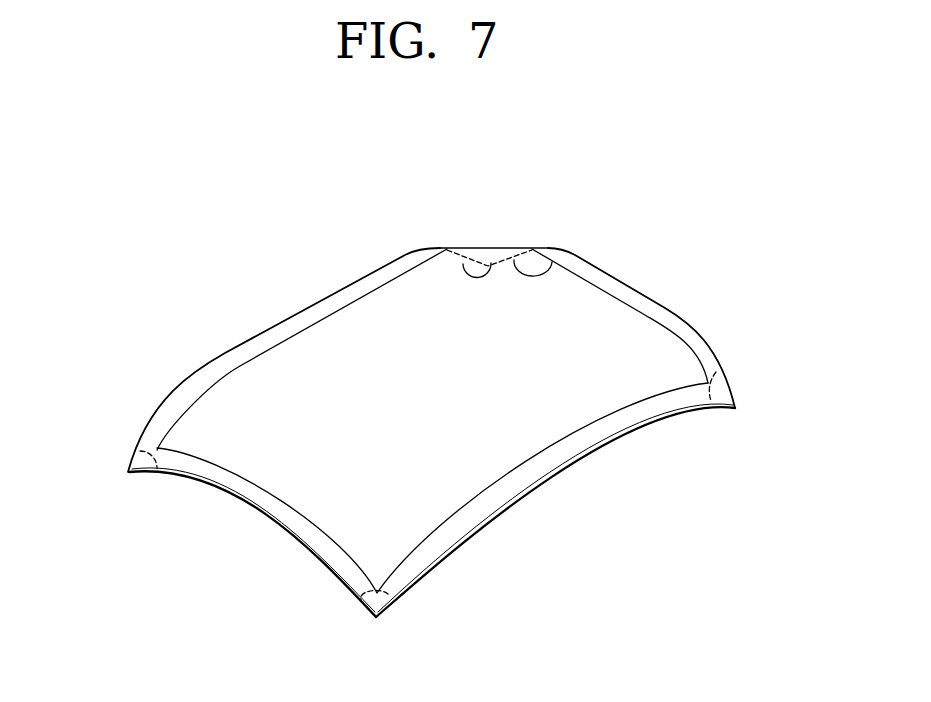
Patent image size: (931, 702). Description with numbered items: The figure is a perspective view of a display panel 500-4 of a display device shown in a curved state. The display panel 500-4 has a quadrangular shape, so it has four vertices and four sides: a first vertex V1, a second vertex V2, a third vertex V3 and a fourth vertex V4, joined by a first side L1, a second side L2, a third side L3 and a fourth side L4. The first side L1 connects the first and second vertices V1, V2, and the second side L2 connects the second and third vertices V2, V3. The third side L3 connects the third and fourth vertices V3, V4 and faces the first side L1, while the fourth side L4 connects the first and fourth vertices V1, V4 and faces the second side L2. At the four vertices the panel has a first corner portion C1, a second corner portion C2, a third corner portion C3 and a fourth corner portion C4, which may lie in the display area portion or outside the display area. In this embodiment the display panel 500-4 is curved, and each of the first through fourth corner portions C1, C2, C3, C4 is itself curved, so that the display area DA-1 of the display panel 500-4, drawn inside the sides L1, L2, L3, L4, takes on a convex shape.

The display panel 500-4 is at (696, 162).
The first side L1 is at (322, 299).
The second side L2 is at (647, 292).
The third side L3 is at (590, 454).
The fourth side L4 is at (268, 514).
The display area DA-1 is at (523, 472).
The first corner portion C1 is at (157, 450).
The second corner portion C2 is at (552, 262).
The third corner portion C3 is at (723, 373).
The fourth corner portion C4 is at (382, 586).
The first vertex V1 is at (128, 472).
The second vertex V2 is at (463, 264).
The third vertex V3 is at (735, 408).
The fourth vertex V4 is at (376, 618).